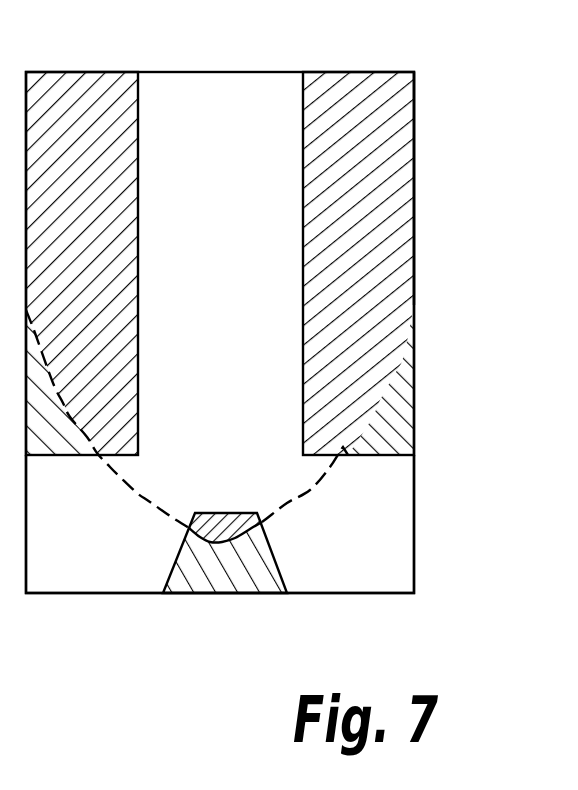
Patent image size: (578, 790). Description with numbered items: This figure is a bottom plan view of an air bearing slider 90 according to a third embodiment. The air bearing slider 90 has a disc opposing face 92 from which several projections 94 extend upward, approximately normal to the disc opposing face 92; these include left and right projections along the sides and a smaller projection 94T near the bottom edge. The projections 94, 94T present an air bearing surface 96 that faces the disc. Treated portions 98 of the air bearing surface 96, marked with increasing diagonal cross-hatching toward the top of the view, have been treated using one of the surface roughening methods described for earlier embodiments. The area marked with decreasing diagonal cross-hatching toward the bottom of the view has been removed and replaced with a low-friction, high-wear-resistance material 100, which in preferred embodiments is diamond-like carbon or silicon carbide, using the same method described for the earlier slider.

The air bearing slider 90 is at (473, 153).
The disc opposing face 92 is at (360, 542).
The projections 94 is at (115, 90).
The projection 94T is at (238, 585).
The air bearing surface 96 is at (384, 107).
The treated portions 98 is at (110, 247).
The low-friction, high-wear-resistance material 100 is at (390, 420).